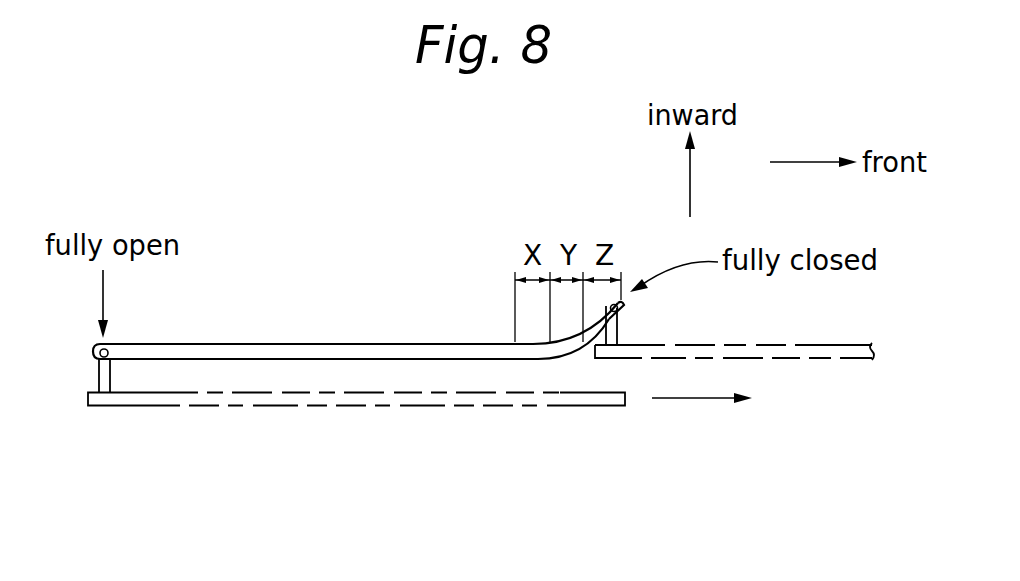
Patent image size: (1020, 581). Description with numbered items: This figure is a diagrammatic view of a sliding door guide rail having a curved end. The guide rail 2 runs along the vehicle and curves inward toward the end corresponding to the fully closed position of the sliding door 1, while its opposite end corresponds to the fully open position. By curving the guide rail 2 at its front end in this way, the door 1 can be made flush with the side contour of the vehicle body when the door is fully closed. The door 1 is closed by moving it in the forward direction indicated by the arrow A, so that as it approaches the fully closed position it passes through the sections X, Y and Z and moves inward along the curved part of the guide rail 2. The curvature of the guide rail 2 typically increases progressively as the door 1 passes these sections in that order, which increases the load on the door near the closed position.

The sliding door 1 is at (465, 406).
The guide rail 2 is at (345, 344).
The arrow A is at (692, 398).